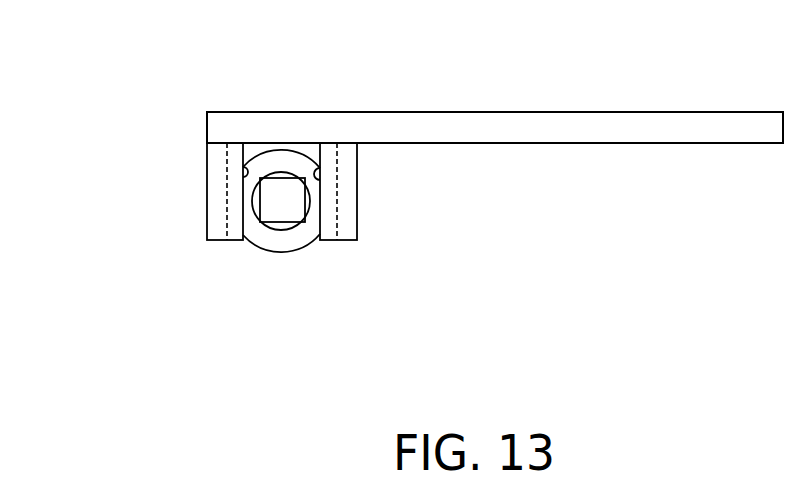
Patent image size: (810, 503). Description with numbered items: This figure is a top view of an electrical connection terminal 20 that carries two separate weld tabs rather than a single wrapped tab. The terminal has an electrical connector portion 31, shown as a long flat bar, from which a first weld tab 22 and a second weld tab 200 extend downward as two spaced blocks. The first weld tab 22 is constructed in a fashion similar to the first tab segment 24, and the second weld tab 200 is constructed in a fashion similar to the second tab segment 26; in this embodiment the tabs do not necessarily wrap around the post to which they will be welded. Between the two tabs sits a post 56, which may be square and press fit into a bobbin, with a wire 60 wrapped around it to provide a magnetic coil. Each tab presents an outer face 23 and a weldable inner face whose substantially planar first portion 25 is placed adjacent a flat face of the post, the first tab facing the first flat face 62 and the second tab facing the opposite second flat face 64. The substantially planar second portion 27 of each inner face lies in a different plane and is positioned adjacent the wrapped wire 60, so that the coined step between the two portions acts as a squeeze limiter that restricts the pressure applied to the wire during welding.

The electrical connection terminal 20 is at (297, 99).
The terminal weld tab 22 is at (215, 152).
The outer face 23 is at (207, 179).
The first tab segment 24 is at (170, 250).
The substantially planar first portion 25 is at (243, 177).
The second tab segment 26 is at (354, 265).
The substantially planar second portion 27 is at (229, 228).
The electrical connector portion 31 is at (547, 112).
The post 56 is at (282, 200).
The wire 60 is at (303, 230).
The first flat face 62 is at (260, 200).
The second flat face 64 is at (308, 198).
The second weld tab 200 is at (344, 204).